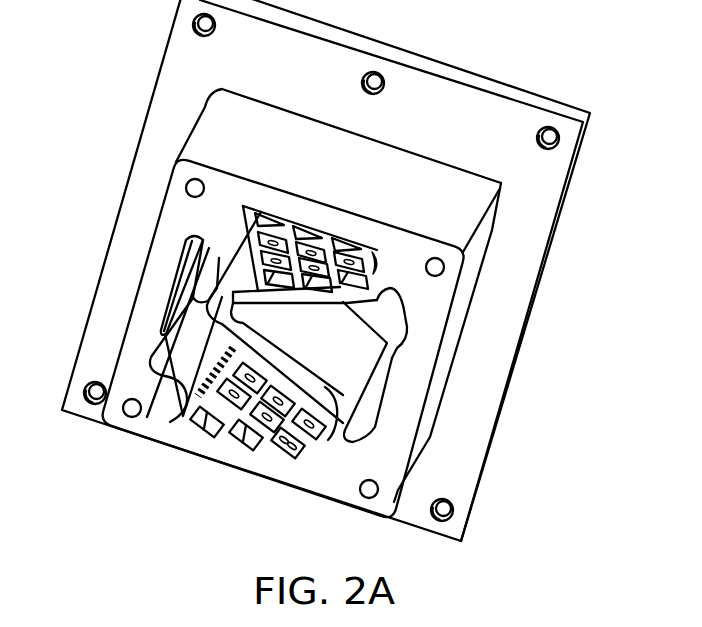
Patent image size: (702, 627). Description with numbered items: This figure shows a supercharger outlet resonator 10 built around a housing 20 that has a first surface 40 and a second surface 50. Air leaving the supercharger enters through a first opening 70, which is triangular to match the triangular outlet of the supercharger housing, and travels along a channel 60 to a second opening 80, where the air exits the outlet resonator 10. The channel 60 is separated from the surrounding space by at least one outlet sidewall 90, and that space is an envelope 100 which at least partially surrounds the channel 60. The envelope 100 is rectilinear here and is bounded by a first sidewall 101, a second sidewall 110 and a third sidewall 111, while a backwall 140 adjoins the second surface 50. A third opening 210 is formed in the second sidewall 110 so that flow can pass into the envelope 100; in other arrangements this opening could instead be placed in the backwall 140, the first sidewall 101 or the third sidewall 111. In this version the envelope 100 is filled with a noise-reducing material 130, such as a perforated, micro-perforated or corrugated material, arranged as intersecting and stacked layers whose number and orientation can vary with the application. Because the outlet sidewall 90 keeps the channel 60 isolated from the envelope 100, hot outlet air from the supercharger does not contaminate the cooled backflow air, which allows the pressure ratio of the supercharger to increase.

The outlet resonator 10 is at (86, 104).
The housing 20 is at (250, 153).
The first surface 40 is at (308, 215).
The second surface 50 is at (491, 75).
The channel 60 is at (347, 352).
The first opening 70 is at (391, 381).
The second opening 80 is at (386, 309).
The outlet sidewall 90 is at (330, 440).
The envelope 100 is at (181, 417).
The first sidewall 101 is at (473, 190).
The second sidewall 110 is at (160, 283).
The third sidewall 111 is at (263, 487).
The noise-reducing material 130 is at (259, 424).
The backwall 140 is at (209, 246).
The third opening 210 is at (184, 260).